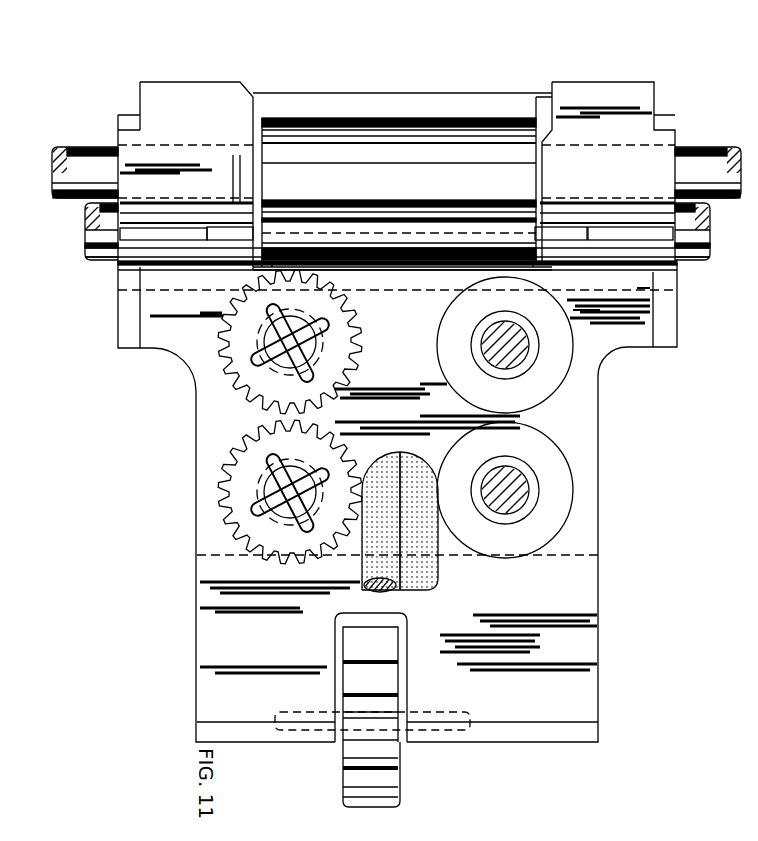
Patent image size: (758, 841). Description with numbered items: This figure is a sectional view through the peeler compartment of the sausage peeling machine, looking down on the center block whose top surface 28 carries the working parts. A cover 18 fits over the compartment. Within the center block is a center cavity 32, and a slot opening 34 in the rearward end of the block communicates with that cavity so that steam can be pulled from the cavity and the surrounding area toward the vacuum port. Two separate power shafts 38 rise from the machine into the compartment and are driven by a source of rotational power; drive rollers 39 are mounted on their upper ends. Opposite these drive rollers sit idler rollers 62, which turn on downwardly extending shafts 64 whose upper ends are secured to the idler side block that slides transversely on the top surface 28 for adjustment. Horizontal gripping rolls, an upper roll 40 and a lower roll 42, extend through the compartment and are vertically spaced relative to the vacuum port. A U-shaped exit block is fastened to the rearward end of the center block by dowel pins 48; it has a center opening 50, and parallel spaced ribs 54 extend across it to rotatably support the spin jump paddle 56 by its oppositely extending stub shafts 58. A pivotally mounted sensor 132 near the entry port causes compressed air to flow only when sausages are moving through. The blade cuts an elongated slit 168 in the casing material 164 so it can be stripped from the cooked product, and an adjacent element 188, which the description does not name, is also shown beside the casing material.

The cover 18 is at (435, 672).
The top surface 28 is at (170, 360).
The center cavity 32 is at (637, 288).
The slot opening 34 is at (593, 322).
The power shafts 38 is at (217, 497).
The drive rollers 39 is at (295, 362).
The upper gripping roll 40 is at (468, 200).
The lower gripping roll 42 is at (450, 118).
The dowel pins 48 is at (209, 80).
The center opening 50 is at (437, 102).
The ribs 54 is at (120, 262).
The spin jump paddle 56 is at (413, 227).
The stub shafts 58 is at (228, 255).
The idler rollers 62 is at (540, 393).
The shafts 64 is at (505, 345).
The sensor 132 is at (395, 755).
The casing material 164 is at (427, 538).
The elongated slit 168 is at (376, 590).
The pad divider 188 is at (410, 547).